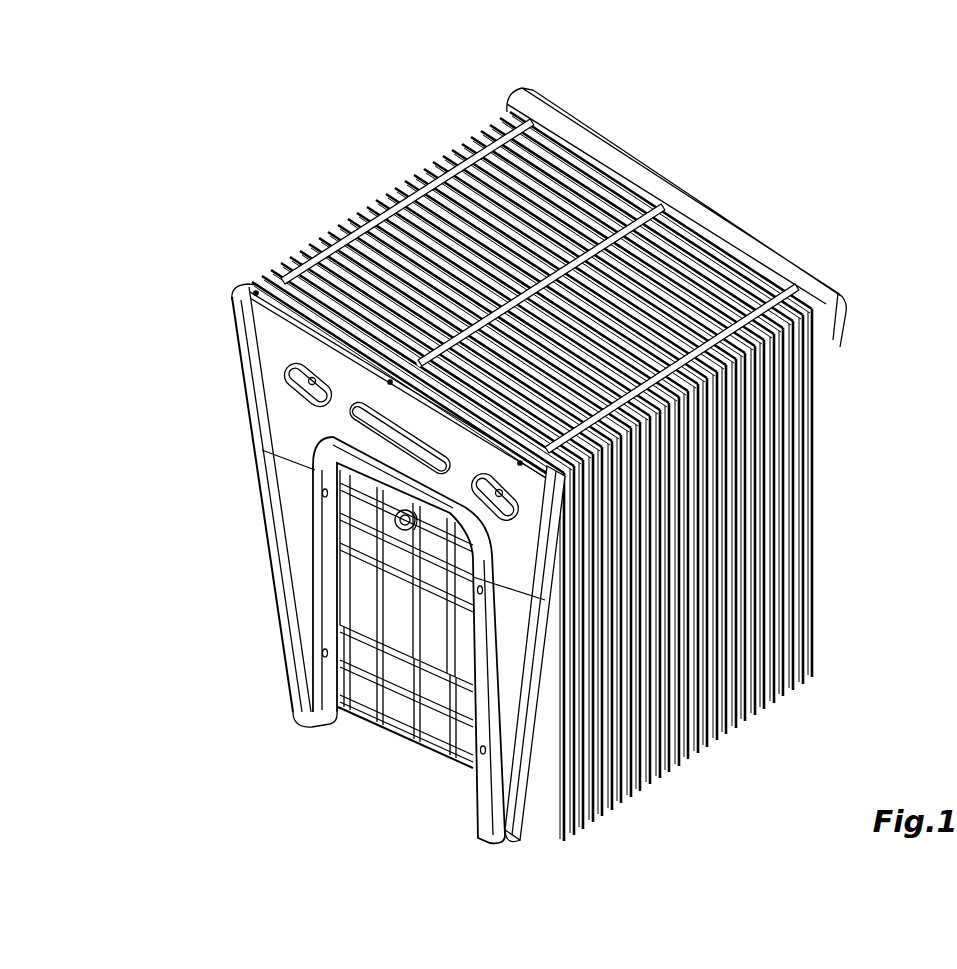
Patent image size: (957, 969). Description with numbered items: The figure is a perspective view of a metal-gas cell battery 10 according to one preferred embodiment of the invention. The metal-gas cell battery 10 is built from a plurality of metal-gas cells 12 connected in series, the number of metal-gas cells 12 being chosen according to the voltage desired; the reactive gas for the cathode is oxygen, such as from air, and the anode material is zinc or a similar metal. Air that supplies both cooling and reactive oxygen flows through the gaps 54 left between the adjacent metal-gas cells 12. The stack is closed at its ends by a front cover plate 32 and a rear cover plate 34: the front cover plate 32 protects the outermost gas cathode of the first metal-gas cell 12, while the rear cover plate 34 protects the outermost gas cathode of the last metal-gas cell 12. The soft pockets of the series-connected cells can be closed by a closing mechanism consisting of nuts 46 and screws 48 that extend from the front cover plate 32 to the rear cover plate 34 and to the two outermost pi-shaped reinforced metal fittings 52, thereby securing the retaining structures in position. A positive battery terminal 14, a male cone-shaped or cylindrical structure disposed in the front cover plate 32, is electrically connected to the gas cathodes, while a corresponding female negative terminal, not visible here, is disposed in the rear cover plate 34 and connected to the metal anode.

The metal-gas cell battery 10 is at (778, 183).
The metal-gas cell 12 is at (540, 160).
The positive battery terminal 14 is at (400, 523).
The front cover plate 32 is at (445, 720).
The rear cover plate 34 is at (793, 278).
The nut 46 is at (245, 289).
The screw 48 is at (385, 215).
The pi-shaped reinforced metal fitting 52 is at (265, 463).
The gap 54 is at (790, 520).